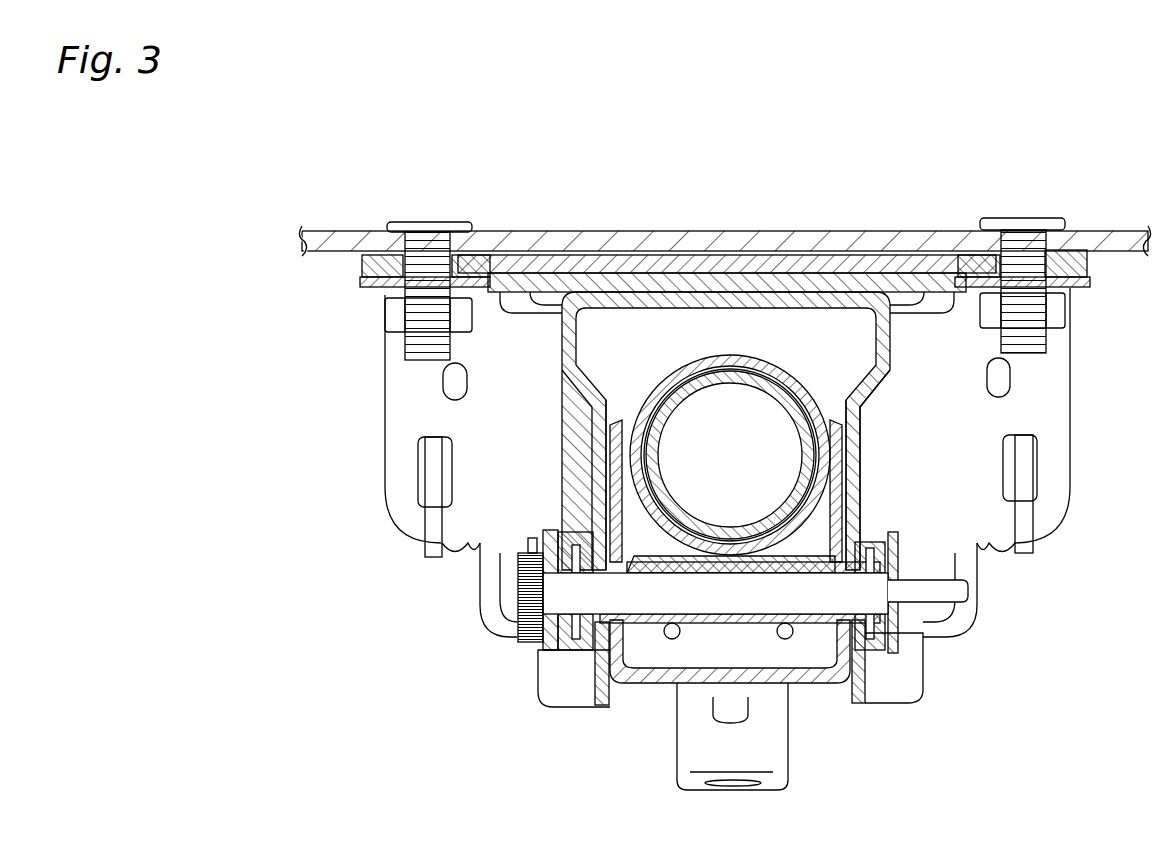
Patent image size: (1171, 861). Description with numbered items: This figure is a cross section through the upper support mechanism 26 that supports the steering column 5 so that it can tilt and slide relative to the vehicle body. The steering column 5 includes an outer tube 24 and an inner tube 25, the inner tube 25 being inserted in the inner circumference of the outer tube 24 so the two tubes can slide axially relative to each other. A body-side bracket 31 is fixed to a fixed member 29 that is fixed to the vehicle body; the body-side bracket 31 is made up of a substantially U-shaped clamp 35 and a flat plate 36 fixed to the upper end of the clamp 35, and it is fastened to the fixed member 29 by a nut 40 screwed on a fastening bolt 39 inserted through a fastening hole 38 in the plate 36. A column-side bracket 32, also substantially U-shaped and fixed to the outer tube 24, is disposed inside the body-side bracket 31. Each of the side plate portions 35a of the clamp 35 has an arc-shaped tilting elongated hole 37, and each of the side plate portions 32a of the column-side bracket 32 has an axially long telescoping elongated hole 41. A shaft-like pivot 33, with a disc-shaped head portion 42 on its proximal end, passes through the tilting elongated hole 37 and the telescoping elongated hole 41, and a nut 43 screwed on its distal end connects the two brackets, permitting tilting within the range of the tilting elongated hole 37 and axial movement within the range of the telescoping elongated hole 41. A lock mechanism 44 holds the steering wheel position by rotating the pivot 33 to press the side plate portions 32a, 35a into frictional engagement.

The steering column 5 is at (726, 431).
The outer tube 24 is at (735, 362).
The inner tube 25 is at (692, 388).
The upper support mechanism 26 is at (1014, 170).
The fixed member 29 is at (1124, 240).
The body-side bracket 31 is at (727, 222).
The column-side bracket 32 is at (650, 684).
The side plate portions 32a is at (617, 425).
The pivot 33 is at (524, 550).
The clamp 35 is at (807, 193).
The side plate portions 35a is at (596, 462).
The plate 36 is at (784, 265).
The tilting elongated hole 37 is at (556, 535).
The fastening hole 38 is at (362, 268).
The fastening bolt 39 is at (420, 228).
The nut 40 is at (385, 316).
The telescoping elongated hole 41 is at (614, 573).
The head portion 42 is at (528, 642).
The nut 43 is at (907, 636).
The lock mechanism 44 is at (556, 655).